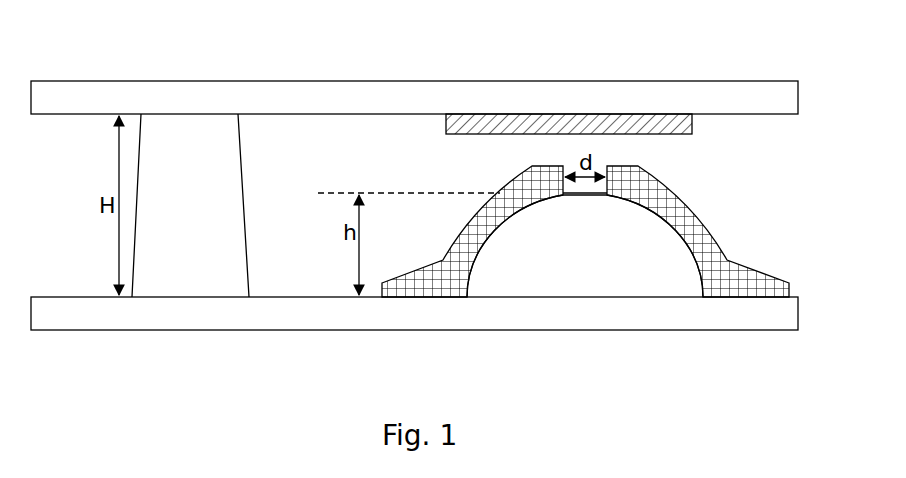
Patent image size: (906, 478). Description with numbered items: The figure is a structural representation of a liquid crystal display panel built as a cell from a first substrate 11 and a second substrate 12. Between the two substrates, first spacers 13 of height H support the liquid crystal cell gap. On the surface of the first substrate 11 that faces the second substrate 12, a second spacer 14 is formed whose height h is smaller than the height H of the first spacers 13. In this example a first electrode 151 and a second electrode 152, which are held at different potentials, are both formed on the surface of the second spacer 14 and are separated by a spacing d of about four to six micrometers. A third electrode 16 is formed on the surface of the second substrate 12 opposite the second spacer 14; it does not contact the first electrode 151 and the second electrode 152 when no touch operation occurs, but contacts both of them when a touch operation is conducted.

The first substrate 11 is at (507, 315).
The second substrate 12 is at (610, 95).
The first spacer 13 is at (196, 152).
The second spacer 14 is at (585, 265).
The third electrode 16 is at (530, 117).
The first electrode 151 is at (507, 183).
The second electrode 152 is at (685, 200).